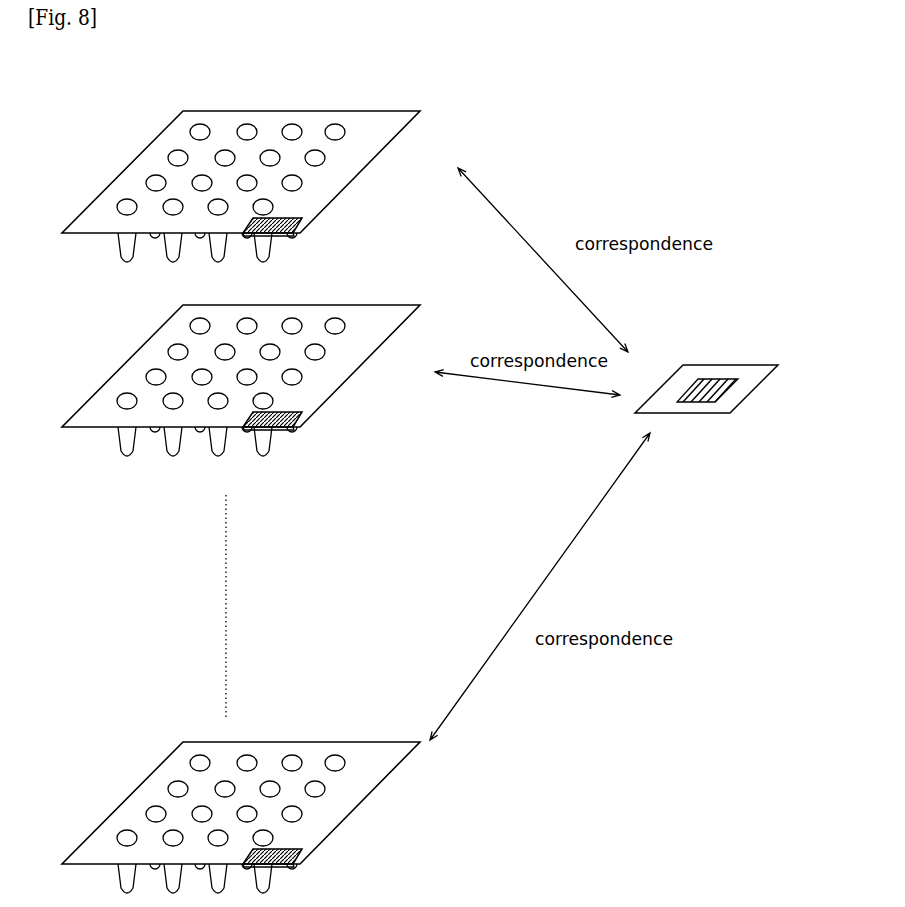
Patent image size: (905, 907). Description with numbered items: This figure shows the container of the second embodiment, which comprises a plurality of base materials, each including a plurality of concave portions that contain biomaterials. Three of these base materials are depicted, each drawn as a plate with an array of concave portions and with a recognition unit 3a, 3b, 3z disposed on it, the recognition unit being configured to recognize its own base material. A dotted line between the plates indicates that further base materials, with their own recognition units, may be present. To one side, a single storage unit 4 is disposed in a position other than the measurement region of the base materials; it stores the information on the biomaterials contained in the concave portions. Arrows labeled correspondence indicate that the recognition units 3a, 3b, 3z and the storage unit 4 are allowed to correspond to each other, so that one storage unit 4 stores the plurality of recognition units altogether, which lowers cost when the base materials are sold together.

The recognition unit 3a is at (299, 227).
The recognition unit 3b is at (299, 421).
The recognition unit 3z is at (299, 858).
The storage unit 4 is at (727, 402).